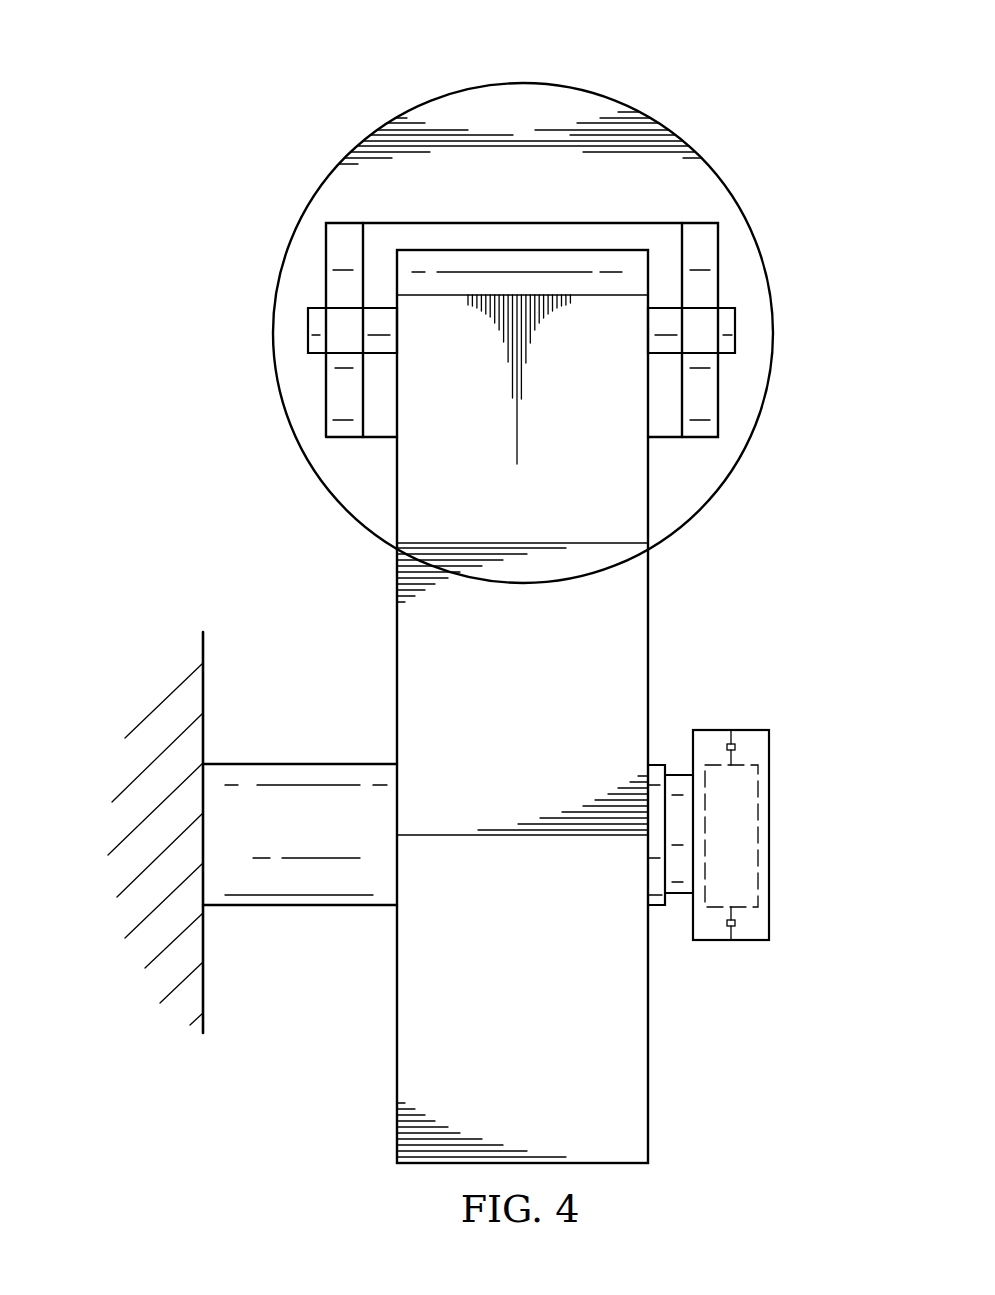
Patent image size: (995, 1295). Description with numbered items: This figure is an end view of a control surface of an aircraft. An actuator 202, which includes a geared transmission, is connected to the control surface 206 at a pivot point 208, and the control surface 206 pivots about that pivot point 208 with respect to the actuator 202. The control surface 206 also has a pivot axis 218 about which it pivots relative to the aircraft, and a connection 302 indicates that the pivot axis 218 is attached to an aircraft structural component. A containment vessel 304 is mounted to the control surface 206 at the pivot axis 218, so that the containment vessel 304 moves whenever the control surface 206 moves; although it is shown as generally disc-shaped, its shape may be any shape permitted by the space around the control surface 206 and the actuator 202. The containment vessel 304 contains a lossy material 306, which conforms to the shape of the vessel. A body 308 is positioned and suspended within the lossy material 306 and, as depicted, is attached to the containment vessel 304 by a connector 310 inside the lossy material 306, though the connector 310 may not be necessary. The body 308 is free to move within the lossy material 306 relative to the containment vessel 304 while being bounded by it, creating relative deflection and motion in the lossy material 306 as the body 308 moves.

The actuator 202 is at (470, 84).
The control surface 206 is at (545, 703).
The pivot point 208 is at (723, 308).
The pivot axis 218 is at (293, 906).
The connection 302 is at (113, 880).
The containment vessel 304 is at (756, 837).
The lossy material 306 is at (760, 923).
The body 308 is at (758, 850).
The connector 310 is at (738, 750).